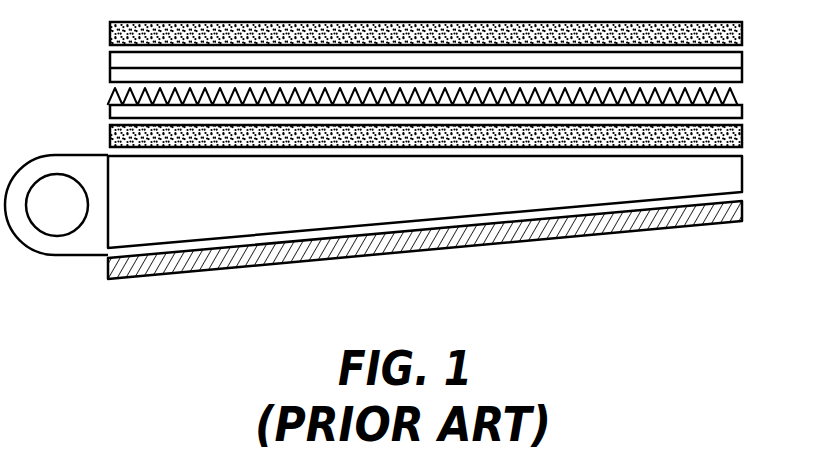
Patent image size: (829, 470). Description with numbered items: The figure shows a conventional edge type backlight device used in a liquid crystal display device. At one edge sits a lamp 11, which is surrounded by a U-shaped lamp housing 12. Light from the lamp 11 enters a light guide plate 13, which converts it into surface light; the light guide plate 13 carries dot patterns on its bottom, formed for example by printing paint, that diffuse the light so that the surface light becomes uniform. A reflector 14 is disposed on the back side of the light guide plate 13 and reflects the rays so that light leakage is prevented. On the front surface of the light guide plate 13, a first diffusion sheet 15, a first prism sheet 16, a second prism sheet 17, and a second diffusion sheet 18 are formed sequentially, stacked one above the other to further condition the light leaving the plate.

The lamp 11 is at (54, 174).
The U-shaped lamp housing 12 is at (70, 256).
The light guide plate 13 is at (724, 181).
The reflector 14 is at (742, 209).
The first diffusion sheet 15 is at (728, 142).
The first prism sheet 16 is at (754, 90).
The second prism sheet 17 is at (754, 53).
The second diffusion sheet 18 is at (726, 38).